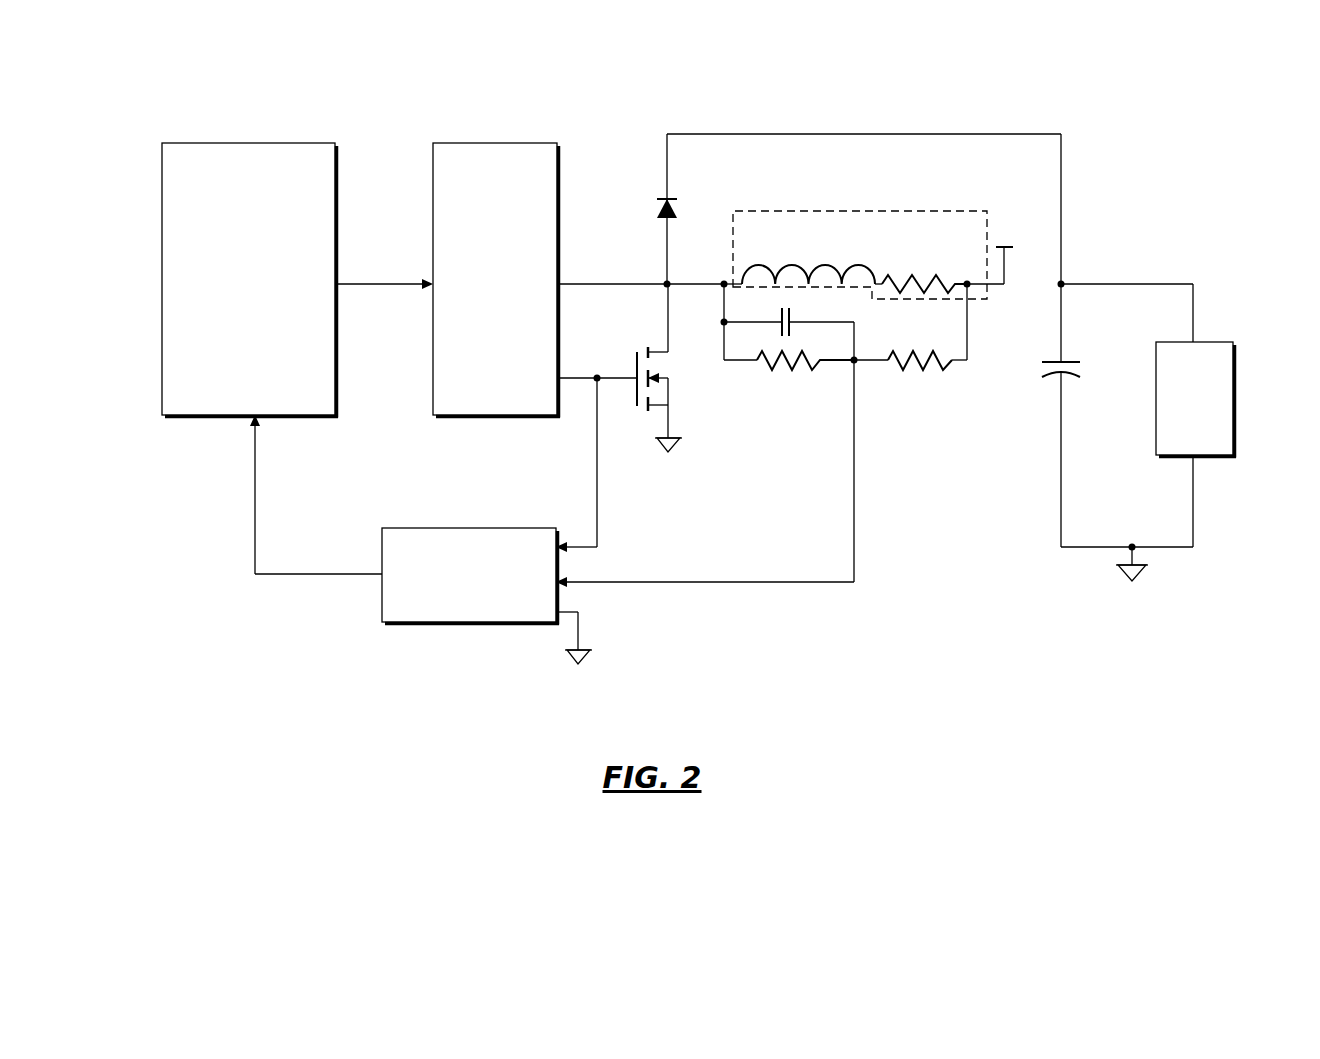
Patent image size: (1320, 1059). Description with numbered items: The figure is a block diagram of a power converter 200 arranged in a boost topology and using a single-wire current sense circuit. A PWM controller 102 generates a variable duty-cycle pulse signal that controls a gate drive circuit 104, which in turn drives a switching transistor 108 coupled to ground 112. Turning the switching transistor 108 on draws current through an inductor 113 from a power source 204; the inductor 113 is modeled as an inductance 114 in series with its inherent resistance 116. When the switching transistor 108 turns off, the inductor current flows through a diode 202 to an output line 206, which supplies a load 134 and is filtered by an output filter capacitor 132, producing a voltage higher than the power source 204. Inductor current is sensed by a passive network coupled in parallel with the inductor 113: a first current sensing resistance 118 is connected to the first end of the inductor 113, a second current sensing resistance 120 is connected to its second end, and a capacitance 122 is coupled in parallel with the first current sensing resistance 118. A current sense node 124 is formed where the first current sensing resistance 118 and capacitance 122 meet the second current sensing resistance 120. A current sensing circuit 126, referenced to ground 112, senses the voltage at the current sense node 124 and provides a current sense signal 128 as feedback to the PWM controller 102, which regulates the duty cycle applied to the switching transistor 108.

The power converter 200 is at (1023, 37).
The PWM controller 102 is at (257, 143).
The gate drive circuit 104 is at (485, 143).
The switching transistor 108 is at (668, 384).
The ground 112 is at (678, 443).
The inductor 113 is at (917, 211).
The inductance 114 is at (825, 265).
The inherent resistance 116 is at (905, 275).
The first current sensing resistance 118 is at (782, 370).
The second current sensing resistance 120 is at (915, 370).
The capacitance 122 is at (790, 313).
The current sense node 124 is at (858, 545).
The current sensing circuit 126 is at (450, 528).
The current sense signal 128 is at (313, 574).
The output filter capacitor 132 is at (1073, 361).
The load 134 is at (1212, 341).
The diode 202 is at (678, 216).
The power source 204 is at (1001, 247).
The output line 206 is at (797, 134).